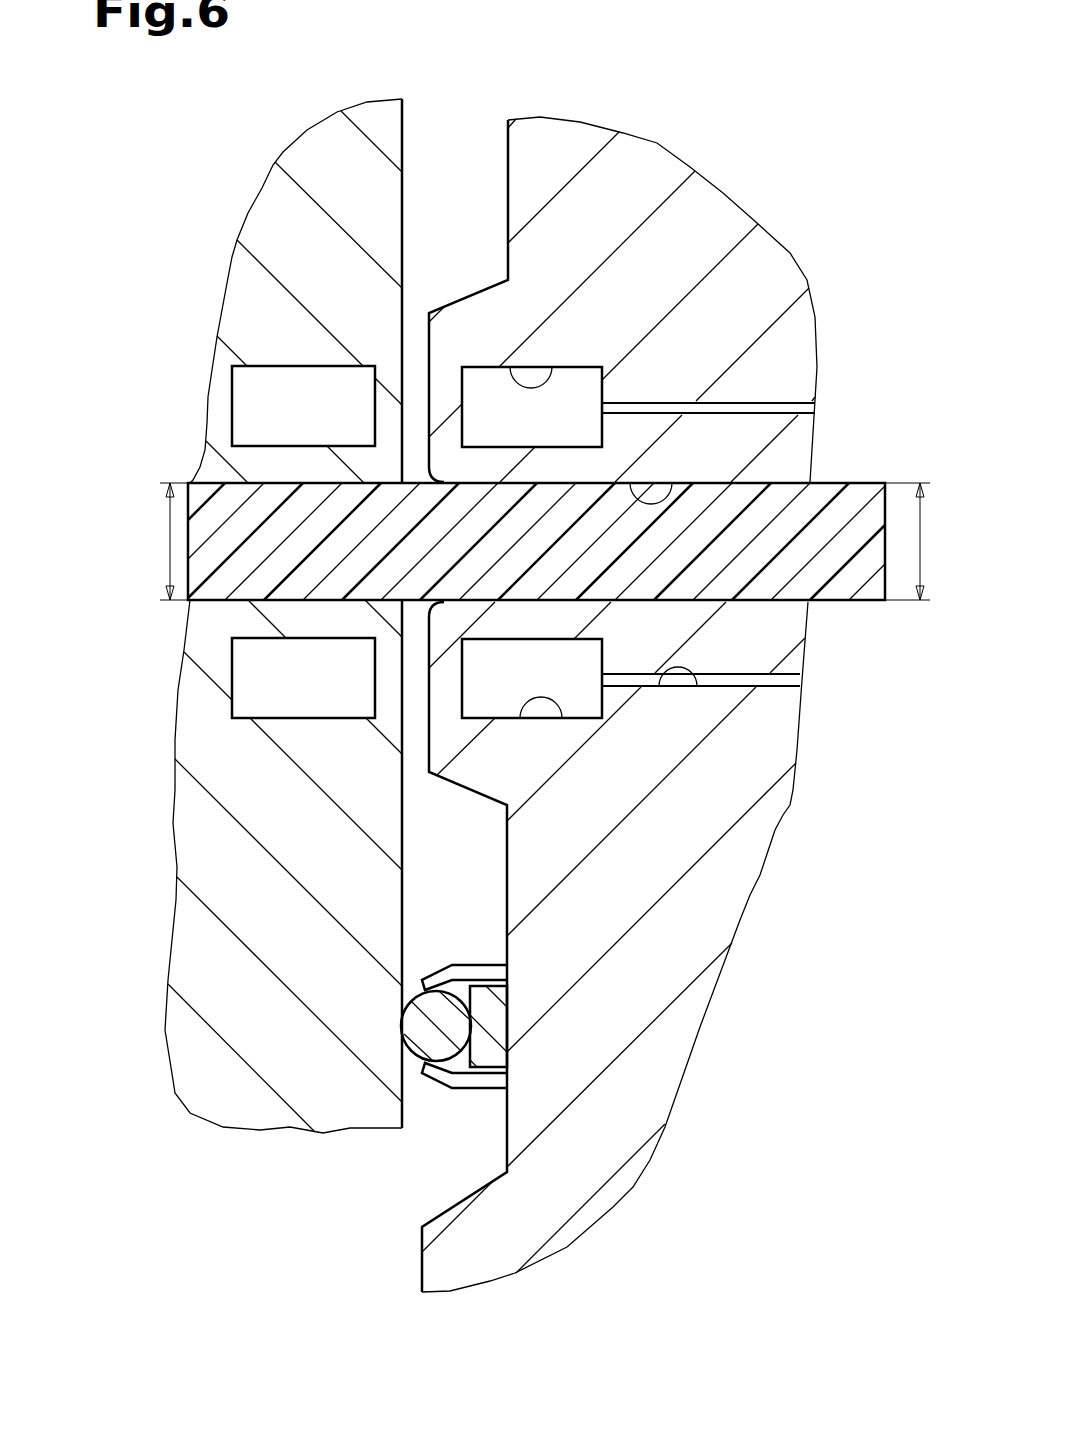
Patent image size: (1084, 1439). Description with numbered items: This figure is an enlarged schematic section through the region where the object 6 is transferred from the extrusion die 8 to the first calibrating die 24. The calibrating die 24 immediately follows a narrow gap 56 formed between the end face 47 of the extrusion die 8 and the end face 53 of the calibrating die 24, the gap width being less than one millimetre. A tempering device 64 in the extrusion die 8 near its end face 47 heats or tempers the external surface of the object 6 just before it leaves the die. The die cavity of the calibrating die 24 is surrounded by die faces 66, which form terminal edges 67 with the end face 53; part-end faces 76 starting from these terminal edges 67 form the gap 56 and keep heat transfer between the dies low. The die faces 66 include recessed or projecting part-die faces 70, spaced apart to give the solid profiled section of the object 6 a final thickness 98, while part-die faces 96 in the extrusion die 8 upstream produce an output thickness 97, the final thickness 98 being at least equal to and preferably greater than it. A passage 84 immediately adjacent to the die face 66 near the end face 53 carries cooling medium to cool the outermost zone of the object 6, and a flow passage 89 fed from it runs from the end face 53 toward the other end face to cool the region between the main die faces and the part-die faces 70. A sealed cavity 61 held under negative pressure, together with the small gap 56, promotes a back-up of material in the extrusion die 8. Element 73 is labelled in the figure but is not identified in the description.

The object 6 is at (822, 560).
The extrusion die 8 is at (328, 228).
The first calibrating die 24 is at (690, 255).
The end face of the extrusion die 47 is at (404, 150).
The first end face of the calibrating die 53 is at (420, 1248).
The gap 56 is at (413, 328).
The cavity 61 is at (427, 922).
The tempering device 64 is at (335, 358).
The die faces 66 is at (833, 603).
The terminal edges 67 is at (426, 486).
The part-die faces 70 is at (630, 483).
The friction surface 73 is at (241, 482).
The part-end faces 76 is at (428, 394).
The passage 84 is at (553, 368).
The flow passage 89 is at (697, 590).
The part-die faces of the extrusion die 96 is at (279, 483).
The output thickness 97 is at (170, 540).
The final thickness 98 is at (922, 540).